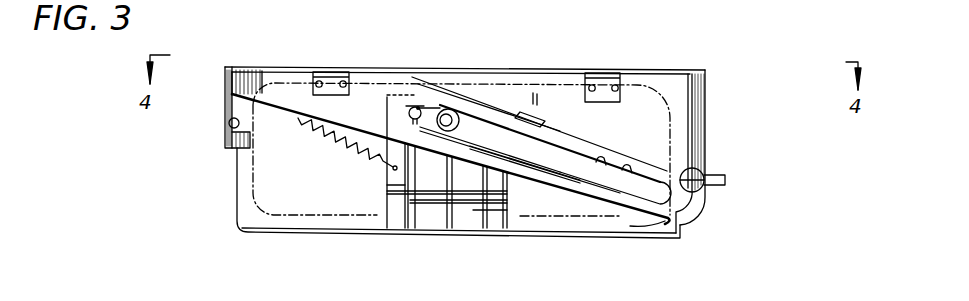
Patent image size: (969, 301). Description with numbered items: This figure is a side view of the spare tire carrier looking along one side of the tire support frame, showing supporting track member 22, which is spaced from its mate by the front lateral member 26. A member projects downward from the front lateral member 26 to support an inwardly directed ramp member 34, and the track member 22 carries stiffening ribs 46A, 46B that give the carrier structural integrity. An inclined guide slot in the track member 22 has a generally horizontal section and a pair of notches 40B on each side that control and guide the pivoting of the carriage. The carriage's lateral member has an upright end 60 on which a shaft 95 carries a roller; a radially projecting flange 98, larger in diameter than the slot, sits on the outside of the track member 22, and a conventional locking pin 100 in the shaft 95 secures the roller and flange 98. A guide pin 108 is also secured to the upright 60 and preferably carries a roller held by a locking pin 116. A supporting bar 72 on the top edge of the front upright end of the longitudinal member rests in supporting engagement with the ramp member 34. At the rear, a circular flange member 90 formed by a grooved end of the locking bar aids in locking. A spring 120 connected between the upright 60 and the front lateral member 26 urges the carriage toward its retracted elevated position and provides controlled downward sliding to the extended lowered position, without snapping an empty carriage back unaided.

The supporting track member 22 is at (262, 72).
The front lateral member 26 is at (227, 87).
The ramp member 34 is at (232, 151).
The notch 40B is at (602, 165).
The stiffening rib 46A is at (578, 182).
The stiffening rib 46B is at (545, 122).
The upright end 60 is at (398, 218).
The supporting bar 72 is at (229, 123).
The circular flange member 90 is at (698, 173).
The shaft 95 is at (444, 131).
The radially projecting flange 98 is at (439, 110).
The locking pin 100 is at (457, 113).
The guide pin 108 is at (410, 108).
The locking pin 116 is at (414, 106).
The spring 120 is at (336, 150).